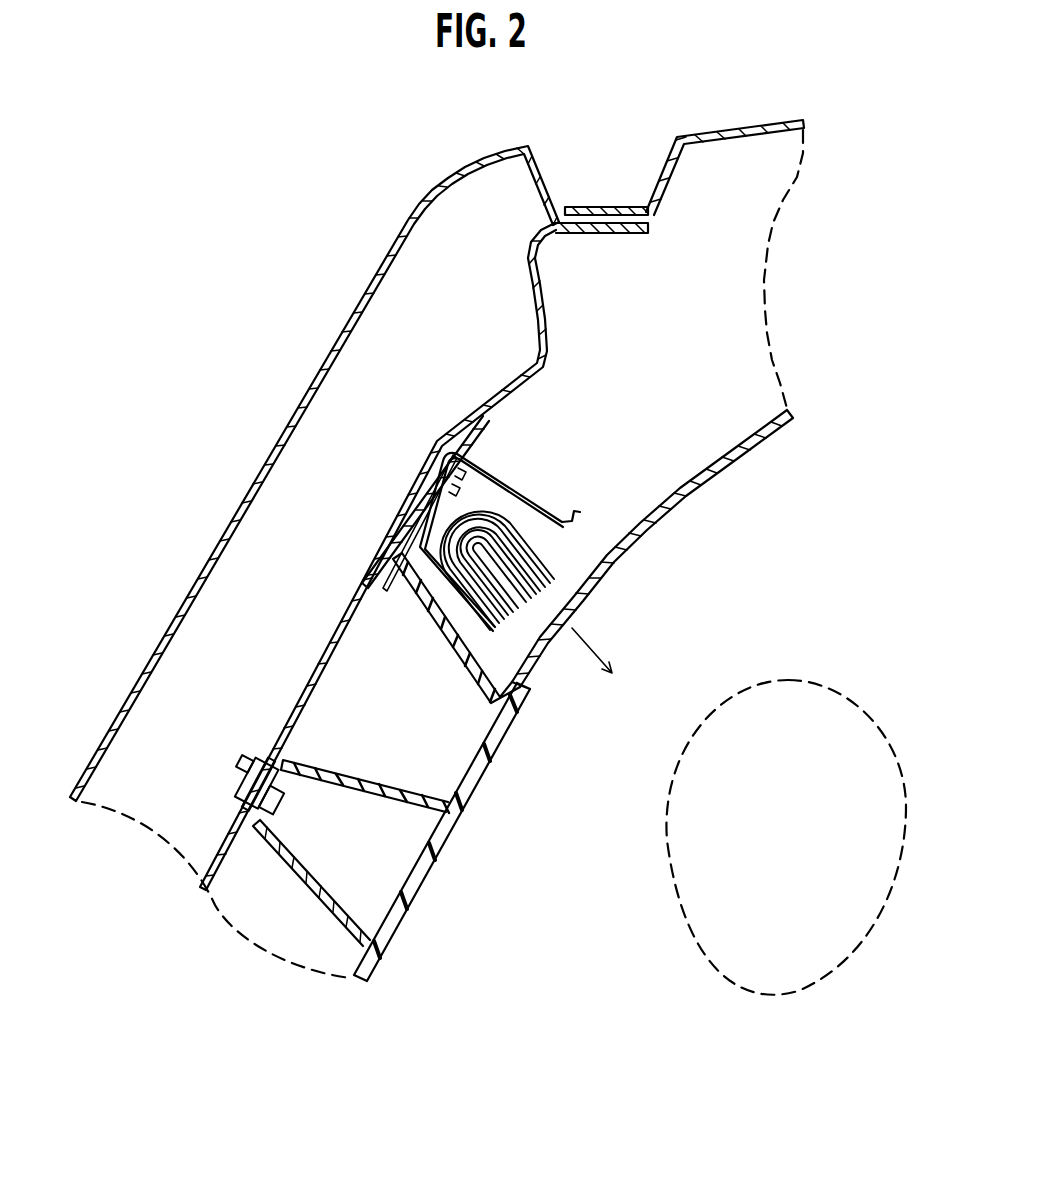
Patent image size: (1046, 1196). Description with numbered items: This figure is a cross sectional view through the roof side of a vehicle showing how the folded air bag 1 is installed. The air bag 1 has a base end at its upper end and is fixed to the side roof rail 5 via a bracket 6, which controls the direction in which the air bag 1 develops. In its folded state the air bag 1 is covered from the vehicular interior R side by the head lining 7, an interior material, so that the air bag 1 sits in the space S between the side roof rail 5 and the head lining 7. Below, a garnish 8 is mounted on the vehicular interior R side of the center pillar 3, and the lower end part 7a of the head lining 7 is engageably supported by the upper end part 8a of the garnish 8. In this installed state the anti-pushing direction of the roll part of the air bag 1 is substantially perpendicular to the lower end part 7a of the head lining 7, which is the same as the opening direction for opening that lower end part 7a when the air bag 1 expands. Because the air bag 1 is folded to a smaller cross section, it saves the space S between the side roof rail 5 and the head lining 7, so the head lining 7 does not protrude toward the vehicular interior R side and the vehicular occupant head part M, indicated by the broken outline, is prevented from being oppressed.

The air bag 1 is at (536, 519).
The center pillar 3 is at (234, 518).
The side roof rail 5 is at (537, 303).
The bracket 6 is at (515, 474).
The head lining 7 is at (790, 445).
The lower end part of the head lining 7a is at (542, 652).
The garnish 8 is at (406, 934).
The upper end part of the garnish 8a is at (527, 693).
The space S is at (658, 367).
The vehicular interior R is at (604, 961).
The vehicular occupant head part M is at (875, 690).